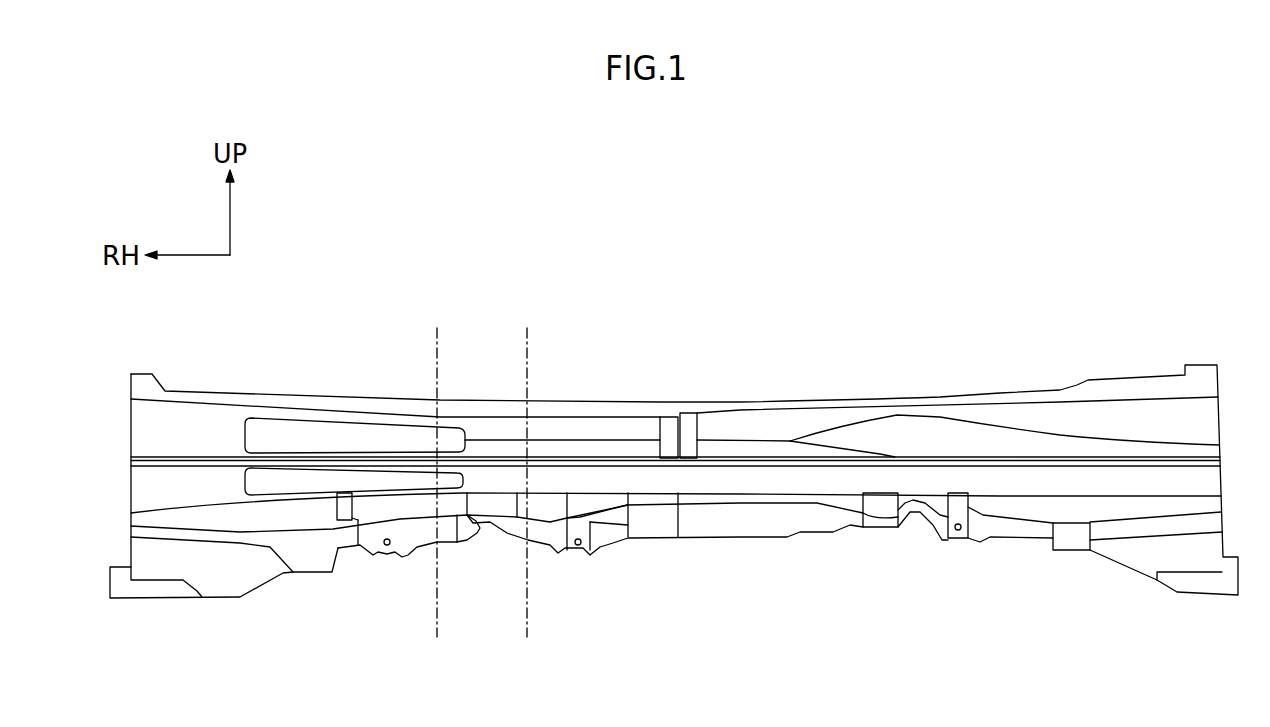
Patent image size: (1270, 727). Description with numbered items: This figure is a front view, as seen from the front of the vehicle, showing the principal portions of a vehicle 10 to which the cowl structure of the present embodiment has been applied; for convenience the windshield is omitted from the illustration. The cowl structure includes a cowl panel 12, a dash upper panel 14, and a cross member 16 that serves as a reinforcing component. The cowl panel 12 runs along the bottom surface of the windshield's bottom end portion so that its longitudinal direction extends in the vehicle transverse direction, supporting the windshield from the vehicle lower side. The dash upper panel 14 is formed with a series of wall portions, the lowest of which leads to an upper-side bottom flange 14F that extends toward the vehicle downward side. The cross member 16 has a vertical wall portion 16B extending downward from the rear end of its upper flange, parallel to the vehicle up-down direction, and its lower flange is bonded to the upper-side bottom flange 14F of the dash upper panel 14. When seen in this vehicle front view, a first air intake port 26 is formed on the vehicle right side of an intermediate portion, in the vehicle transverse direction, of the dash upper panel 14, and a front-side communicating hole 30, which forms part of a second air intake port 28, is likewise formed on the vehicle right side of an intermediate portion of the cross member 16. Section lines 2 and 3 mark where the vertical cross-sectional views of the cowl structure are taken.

The vehicle 10 is at (693, 270).
The cowl panel 12 is at (940, 398).
The dash upper panel 14 is at (346, 411).
The upper-side bottom flange 14F is at (707, 532).
The cross member 16 is at (632, 453).
The vertical wall portion 16B is at (698, 470).
The first air intake port 26 is at (320, 438).
The second air intake port 28 is at (354, 566).
The front-side communicating hole 30 is at (353, 483).
The line 2- 2 is at (539, 336).
The section line 3- 3 is at (449, 336).